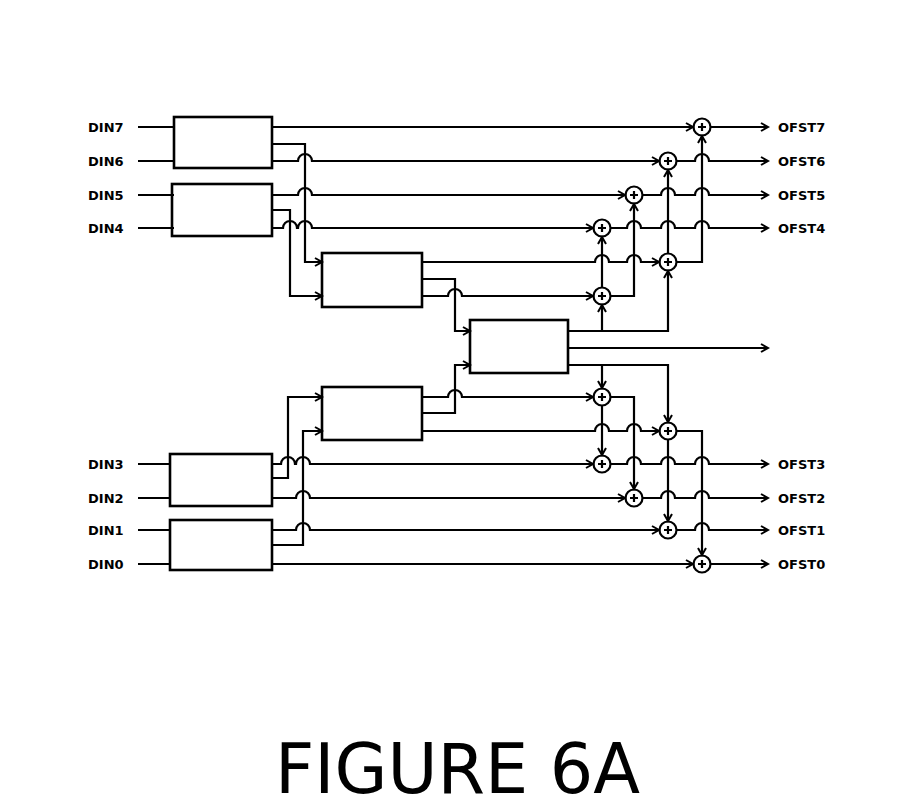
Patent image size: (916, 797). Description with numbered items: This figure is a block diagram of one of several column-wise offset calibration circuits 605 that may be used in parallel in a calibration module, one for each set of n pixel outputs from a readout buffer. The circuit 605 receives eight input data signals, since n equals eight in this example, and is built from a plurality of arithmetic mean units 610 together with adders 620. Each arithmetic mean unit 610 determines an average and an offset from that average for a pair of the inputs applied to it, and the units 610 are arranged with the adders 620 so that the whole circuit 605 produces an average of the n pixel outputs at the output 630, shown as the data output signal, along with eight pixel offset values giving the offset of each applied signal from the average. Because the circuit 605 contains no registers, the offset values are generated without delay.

The column-wise offset calibration circuit 605 is at (300, 80).
The arithmetic mean unit 610 is at (323, 307).
The adder 620 is at (697, 119).
The output 630 is at (797, 339).